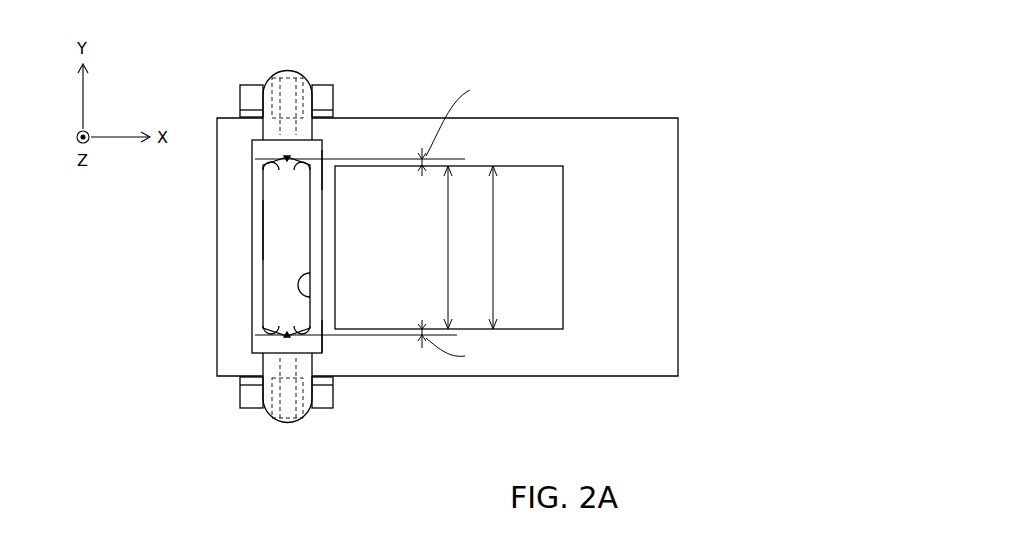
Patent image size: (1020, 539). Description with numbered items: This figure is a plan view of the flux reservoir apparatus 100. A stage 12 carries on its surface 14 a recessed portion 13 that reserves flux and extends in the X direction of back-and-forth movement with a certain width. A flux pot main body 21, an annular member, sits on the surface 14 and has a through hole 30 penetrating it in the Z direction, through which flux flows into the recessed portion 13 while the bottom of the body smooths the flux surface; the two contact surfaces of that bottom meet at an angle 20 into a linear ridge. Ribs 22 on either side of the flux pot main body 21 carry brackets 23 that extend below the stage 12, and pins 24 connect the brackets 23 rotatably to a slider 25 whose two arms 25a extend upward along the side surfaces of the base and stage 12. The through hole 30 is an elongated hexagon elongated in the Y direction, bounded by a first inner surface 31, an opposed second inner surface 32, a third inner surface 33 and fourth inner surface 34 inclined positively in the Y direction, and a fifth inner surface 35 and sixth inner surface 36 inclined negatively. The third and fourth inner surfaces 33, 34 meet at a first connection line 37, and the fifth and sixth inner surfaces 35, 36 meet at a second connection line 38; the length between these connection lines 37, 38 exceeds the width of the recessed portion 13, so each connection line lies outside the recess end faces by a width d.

The flux reservoir apparatus 100 is at (720, 100).
The stage 12 is at (681, 208).
The recessed portion 13 is at (541, 178).
The surface 14 is at (620, 184).
The angle 20 is at (215, 163).
The flux pot main body 21 is at (239, 168).
The ribs 22 is at (306, 421).
The brackets 23 is at (268, 416).
The pins 24 is at (286, 423).
The slider 25 is at (243, 396).
The arms 25a is at (330, 400).
The through hole 30 is at (282, 260).
The first inner surface 31 is at (265, 228).
The second inner surface 32 is at (335, 300).
The third inner surface 33 is at (243, 117).
The fourth inner surface 34 is at (323, 178).
The fifth inner surface 35 is at (300, 284).
The sixth inner surface 36 is at (327, 338).
The first connection line 37 is at (286, 156).
The second connection line 38 is at (270, 327).